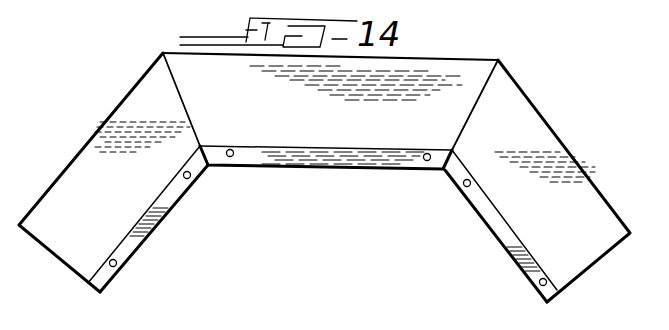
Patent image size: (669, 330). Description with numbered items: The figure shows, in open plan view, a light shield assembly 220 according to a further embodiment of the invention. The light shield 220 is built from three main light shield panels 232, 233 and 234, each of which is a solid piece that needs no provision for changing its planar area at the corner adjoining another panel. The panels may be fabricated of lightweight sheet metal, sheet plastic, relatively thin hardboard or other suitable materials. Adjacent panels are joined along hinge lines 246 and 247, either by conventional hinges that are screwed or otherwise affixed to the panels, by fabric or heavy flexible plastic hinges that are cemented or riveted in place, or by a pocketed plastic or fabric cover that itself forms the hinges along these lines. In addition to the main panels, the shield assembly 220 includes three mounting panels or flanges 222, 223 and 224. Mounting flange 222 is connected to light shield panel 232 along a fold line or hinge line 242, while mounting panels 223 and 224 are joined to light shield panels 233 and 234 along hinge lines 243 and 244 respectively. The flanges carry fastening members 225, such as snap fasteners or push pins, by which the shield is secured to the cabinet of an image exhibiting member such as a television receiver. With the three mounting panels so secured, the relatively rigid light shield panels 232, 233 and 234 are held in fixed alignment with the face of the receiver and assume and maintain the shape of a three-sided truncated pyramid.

The light shield assembly 220 is at (382, 176).
The mounting flange 222 is at (498, 215).
The mounting panel 223 is at (140, 234).
The mounting panel 224 is at (253, 169).
The snap fasteners 225 is at (231, 150).
The light shield panel 232 is at (545, 140).
The light shield panel 233 is at (90, 153).
The light shield panel 234 is at (432, 74).
The hinge line 242 is at (491, 198).
The hinge line 243 is at (140, 220).
The hinge line 244 is at (323, 146).
The hinge line 246 is at (473, 112).
The hinge line 247 is at (182, 99).